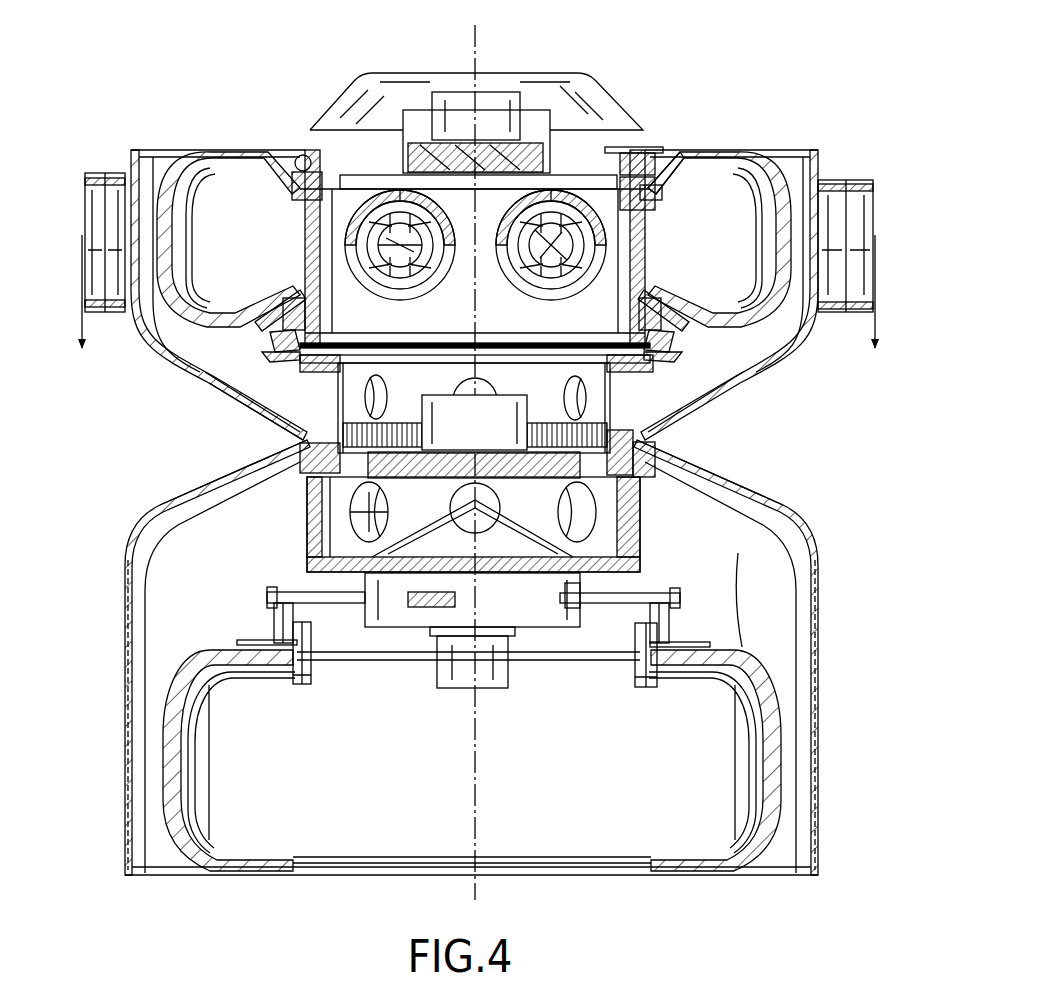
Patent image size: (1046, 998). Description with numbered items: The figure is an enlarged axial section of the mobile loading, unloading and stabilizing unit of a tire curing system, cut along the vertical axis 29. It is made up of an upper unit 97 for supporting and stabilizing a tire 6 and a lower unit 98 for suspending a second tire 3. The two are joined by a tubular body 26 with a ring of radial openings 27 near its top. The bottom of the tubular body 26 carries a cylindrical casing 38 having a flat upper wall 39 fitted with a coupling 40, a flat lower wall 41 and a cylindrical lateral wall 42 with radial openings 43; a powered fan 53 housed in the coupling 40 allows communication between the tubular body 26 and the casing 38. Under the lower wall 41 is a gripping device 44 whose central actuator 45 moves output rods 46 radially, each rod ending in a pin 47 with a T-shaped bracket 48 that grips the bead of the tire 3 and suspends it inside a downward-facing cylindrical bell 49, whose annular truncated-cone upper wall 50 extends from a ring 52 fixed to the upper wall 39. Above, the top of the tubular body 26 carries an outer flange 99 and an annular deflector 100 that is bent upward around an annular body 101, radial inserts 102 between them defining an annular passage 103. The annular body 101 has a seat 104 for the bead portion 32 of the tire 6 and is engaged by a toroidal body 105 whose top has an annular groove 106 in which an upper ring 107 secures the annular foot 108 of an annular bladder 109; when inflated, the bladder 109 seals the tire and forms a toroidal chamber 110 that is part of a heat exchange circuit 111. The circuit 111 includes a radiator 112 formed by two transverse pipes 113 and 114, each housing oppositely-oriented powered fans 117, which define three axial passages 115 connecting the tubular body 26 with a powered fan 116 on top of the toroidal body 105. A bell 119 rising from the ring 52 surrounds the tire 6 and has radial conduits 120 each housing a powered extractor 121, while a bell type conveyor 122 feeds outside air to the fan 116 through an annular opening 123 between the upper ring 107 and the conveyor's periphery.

The tire 3 is at (784, 803).
The tire 6 is at (781, 190).
The tubular body 26 is at (666, 418).
The radial openings 27 is at (506, 480).
The vertical axis 29 is at (477, 885).
The bead portion 32 is at (290, 290).
The cylindrical casing 38 is at (655, 562).
The flat upper wall 39 is at (247, 470).
The coupling 40 is at (303, 440).
The flat lower wall 41 is at (521, 568).
The cylindrical lateral wall 42 is at (660, 455).
The radial openings 43 is at (323, 528).
The gripping device 44 is at (659, 700).
The central actuator 45 is at (581, 584).
The output rods 46 is at (313, 598).
The pin 47 is at (277, 626).
The T-shaped bracket 48 is at (294, 679).
The cylindrical bell 49 is at (819, 772).
The annular truncated-cone upper wall 50 is at (758, 487).
The ring 52 is at (641, 523).
The powered fan 53 is at (474, 408).
The upper unit 97 is at (686, 344).
The lower unit 98 is at (702, 627).
The outer flange 99 is at (323, 373).
The annular deflector 100 is at (277, 341).
The annular body 101 is at (278, 330).
The radial inserts 102 is at (288, 352).
The annular passage 103 is at (760, 396).
The seat 104 is at (673, 322).
The toroidal body 105 is at (647, 240).
The annular groove 106 is at (643, 158).
The upper ring 107 is at (625, 148).
The annular foot 108 is at (651, 196).
The annular bladder 109 is at (300, 170).
The toroidal chamber 110 is at (820, 176).
The circuit 111 is at (778, 165).
The radiator 112 is at (316, 232).
The pipe 113 is at (420, 278).
The pipe 114 is at (527, 272).
The passages 115 is at (340, 234).
The powered fan 116 is at (493, 150).
The powered fans 117 is at (370, 262).
The bell 119 is at (770, 217).
The radial conduits 120 is at (120, 310).
The powered extractor 121 is at (95, 240).
The bell type conveyor 122 is at (588, 133).
The annular opening 123 is at (312, 142).